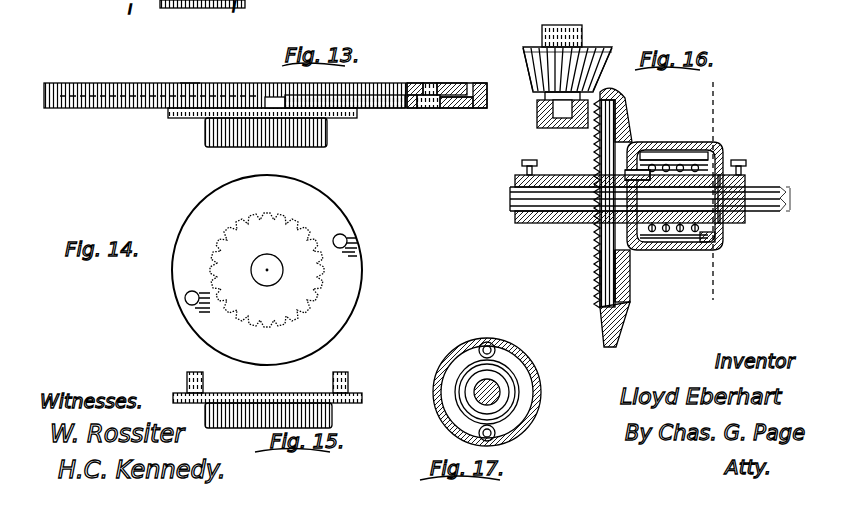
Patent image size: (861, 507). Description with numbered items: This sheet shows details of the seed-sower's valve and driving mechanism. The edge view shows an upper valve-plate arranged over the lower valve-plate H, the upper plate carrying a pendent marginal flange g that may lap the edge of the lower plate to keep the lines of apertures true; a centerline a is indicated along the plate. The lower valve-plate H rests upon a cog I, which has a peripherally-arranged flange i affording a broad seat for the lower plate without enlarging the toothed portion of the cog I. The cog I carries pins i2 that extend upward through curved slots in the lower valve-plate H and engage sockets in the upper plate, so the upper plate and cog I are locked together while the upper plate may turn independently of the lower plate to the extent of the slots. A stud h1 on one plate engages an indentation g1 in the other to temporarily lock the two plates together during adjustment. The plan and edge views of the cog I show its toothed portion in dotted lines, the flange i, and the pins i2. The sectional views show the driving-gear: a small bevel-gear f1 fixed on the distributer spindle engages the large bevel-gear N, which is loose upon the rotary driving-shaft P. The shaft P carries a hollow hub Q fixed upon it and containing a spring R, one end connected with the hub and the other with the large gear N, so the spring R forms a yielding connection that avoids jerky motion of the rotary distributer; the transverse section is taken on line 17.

In FIG. 13, the pendent marginal flange g is at (118, 110).
In FIG. 13, the bar centerline a is at (188, 88).
In FIG. 13, the peripherally-arranged flange i is at (170, 116).
In FIG. 14, the peripherally-arranged flange i is at (195, 206).
In FIG. 15, the peripherally-arranged flange i is at (275, 394).
In FIG. 13, the cog I is at (327, 138).
In FIG. 14, the cog I is at (380, 286).
In FIG. 15, the cog I is at (275, 415).
In FIG. 13, the indentation g1 is at (467, 85).
In FIG. 13, the stud h1 is at (450, 108).
In FIG. 13, the lower valve-plate H is at (466, 108).
In FIG. 14, the pins i2 is at (350, 241).
In FIG. 15, the pins i2 is at (187, 378).
In FIG. 16, the small bevel-gear f1 is at (590, 45).
In FIG. 16, the large bevel-gear N is at (625, 306).
In FIG. 16, the hollow hub Q is at (674, 185).
In FIG. 17, the hollow hub Q is at (487, 378).
In FIG. 16, the spring R is at (676, 246).
In FIG. 17, the spring R is at (520, 400).
In FIG. 16, the rotary driving-shaft P is at (818, 209).
In FIG. 16, the line 17 is at (725, 190).